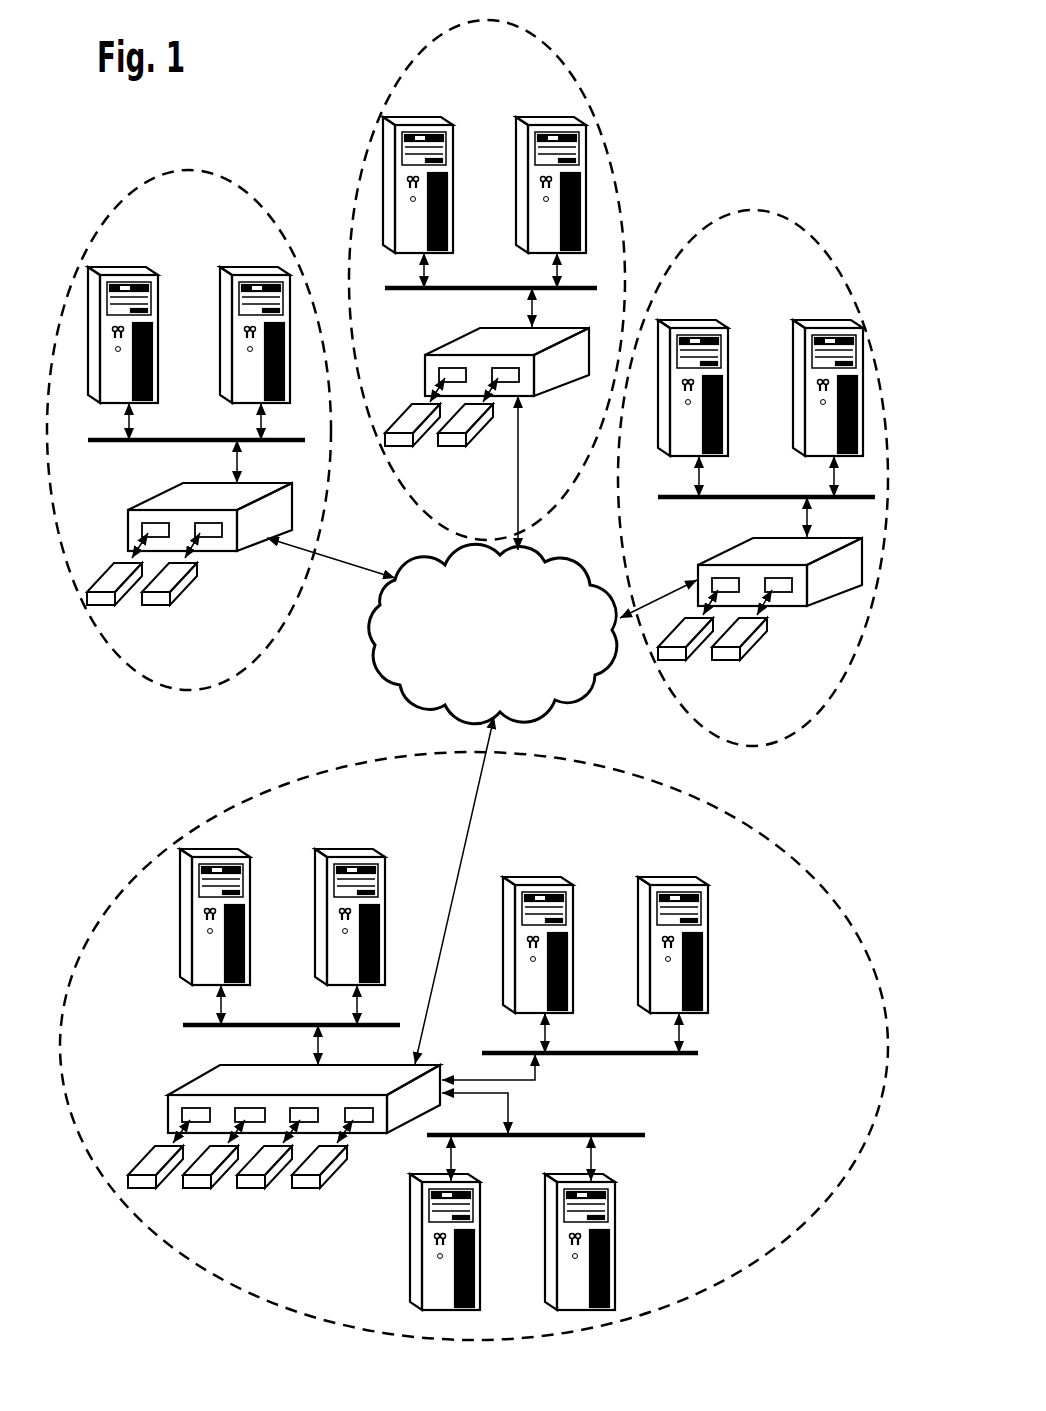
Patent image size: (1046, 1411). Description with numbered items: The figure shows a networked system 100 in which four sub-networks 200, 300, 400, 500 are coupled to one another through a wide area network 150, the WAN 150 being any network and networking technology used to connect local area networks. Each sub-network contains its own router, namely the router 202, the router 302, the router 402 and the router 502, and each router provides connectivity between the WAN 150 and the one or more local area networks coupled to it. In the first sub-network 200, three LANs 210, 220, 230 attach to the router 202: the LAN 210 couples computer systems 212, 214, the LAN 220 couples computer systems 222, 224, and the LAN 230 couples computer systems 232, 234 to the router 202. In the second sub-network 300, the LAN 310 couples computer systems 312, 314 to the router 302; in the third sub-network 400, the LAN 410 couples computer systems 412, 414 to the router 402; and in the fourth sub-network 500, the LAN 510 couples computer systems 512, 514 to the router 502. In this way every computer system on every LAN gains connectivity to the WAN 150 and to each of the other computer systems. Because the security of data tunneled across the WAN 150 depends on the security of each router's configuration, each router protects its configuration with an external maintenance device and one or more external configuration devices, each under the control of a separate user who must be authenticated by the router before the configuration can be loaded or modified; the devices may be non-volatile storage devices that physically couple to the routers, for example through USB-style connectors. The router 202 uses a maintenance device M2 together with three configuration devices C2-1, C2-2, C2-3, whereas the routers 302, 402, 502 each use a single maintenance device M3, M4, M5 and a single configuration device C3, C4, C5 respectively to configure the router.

The networked system 100 is at (809, 57).
The wide area network (WAN) 150 is at (493, 633).
The sub-network 200 is at (205, 822).
The router 202 is at (168, 1108).
The local area network (LAN) 210 is at (253, 1025).
The computer system 212 is at (181, 940).
The computer system 214 is at (387, 877).
The local area network (LAN) 220 is at (575, 1053).
The computer system 222 is at (503, 972).
The computer system 224 is at (710, 945).
The local area network (LAN) 230 is at (555, 1135).
The computer system 232 is at (410, 1272).
The computer system 234 is at (618, 1256).
The external maintenance device M2 is at (142, 1190).
The external configuration device C2-1 is at (197, 1190).
The external configuration device C2-2 is at (250, 1190).
The external configuration device C2-3 is at (305, 1190).
The sub-network 300 is at (140, 183).
The router 302 is at (128, 528).
The local area network (LAN) 310 is at (225, 440).
The computer system 312 is at (157, 320).
The computer system 314 is at (232, 333).
The external maintenance device M3 is at (100, 606).
The external configuration device C3 is at (152, 606).
The sub-network 400 is at (398, 77).
The router 402 is at (425, 368).
The local area network (LAN) 410 is at (518, 288).
The computer system 412 is at (478, 157).
The computer system 414 is at (528, 181).
The external maintenance device M4 is at (398, 447).
The external configuration device C4 is at (450, 447).
The sub-network 500 is at (836, 255).
The router 502 is at (722, 551).
The local area network (LAN) 510 is at (793, 497).
The computer system 512 is at (752, 360).
The computer system 514 is at (805, 385).
The external maintenance device M5 is at (670, 662).
The external configuration device C5 is at (725, 662).